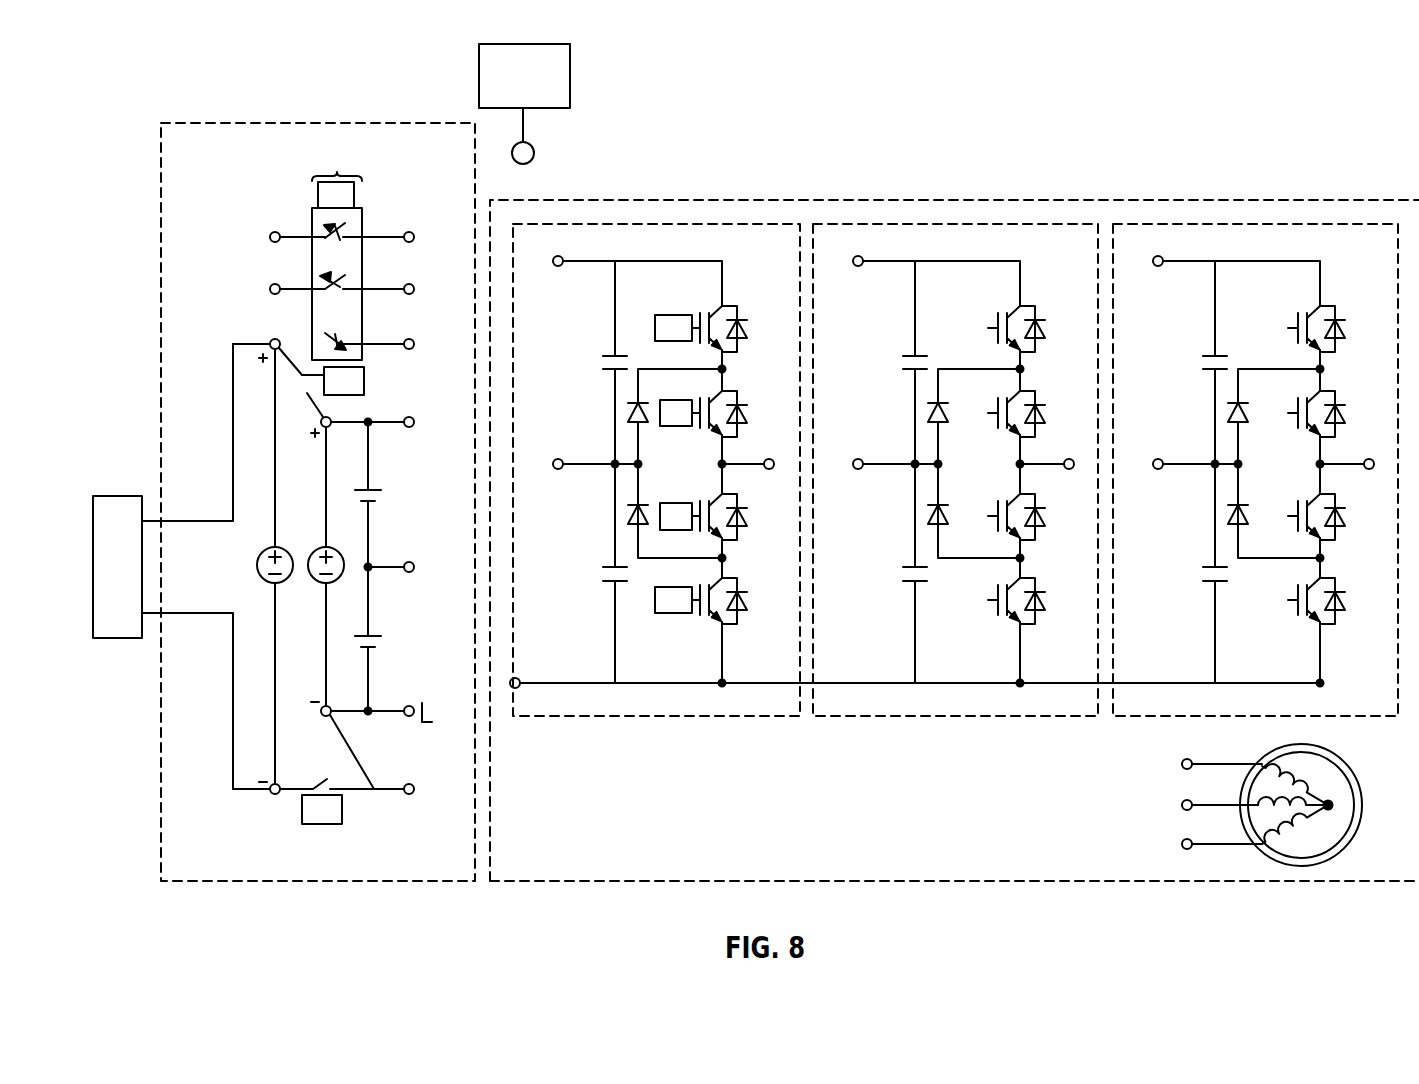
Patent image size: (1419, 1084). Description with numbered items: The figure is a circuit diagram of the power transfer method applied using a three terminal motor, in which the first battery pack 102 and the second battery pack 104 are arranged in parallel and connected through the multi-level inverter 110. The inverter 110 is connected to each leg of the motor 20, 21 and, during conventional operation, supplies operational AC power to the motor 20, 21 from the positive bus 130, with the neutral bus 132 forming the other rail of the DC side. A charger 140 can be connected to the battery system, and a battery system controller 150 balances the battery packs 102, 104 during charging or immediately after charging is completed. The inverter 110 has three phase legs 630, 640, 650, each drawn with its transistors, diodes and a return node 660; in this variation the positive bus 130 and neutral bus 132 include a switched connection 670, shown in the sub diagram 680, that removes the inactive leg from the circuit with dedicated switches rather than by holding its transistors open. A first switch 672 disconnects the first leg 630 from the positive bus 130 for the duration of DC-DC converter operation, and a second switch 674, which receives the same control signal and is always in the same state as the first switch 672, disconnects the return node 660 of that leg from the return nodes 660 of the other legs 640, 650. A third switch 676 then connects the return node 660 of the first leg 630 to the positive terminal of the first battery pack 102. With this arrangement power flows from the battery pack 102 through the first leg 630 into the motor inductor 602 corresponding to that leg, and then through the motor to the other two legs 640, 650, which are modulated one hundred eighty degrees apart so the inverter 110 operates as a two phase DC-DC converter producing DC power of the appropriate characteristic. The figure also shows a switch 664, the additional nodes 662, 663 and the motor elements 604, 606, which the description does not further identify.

The motor 20 is at (1290, 805).
The motor 21 is at (1290, 805).
The first battery pack 102 is at (262, 577).
The second battery pack 104 is at (323, 583).
The multi-level inverter 110 is at (160, 797).
The positive bus 130 is at (363, 237).
The neutral bus 132 is at (670, 685).
The charger 140 is at (118, 496).
The battery system controller 150 is at (570, 58).
The motor inductor 602 is at (1310, 778).
The stator windings 604 is at (1260, 790).
The rotor 606 is at (1283, 813).
The first leg 630 is at (645, 224).
The second leg 640 is at (928, 224).
The third leg 650 is at (1210, 224).
The return node 660 is at (297, 283).
The capacitor 662 is at (378, 288).
The capacitor 663 is at (1198, 468).
The disconnect switch 664 is at (295, 338).
The switched connection 670 is at (302, 219).
The first switch 672 is at (327, 223).
The second switch 674 is at (340, 287).
The third switch 676 is at (318, 322).
The sub diagram 680 is at (322, 881).